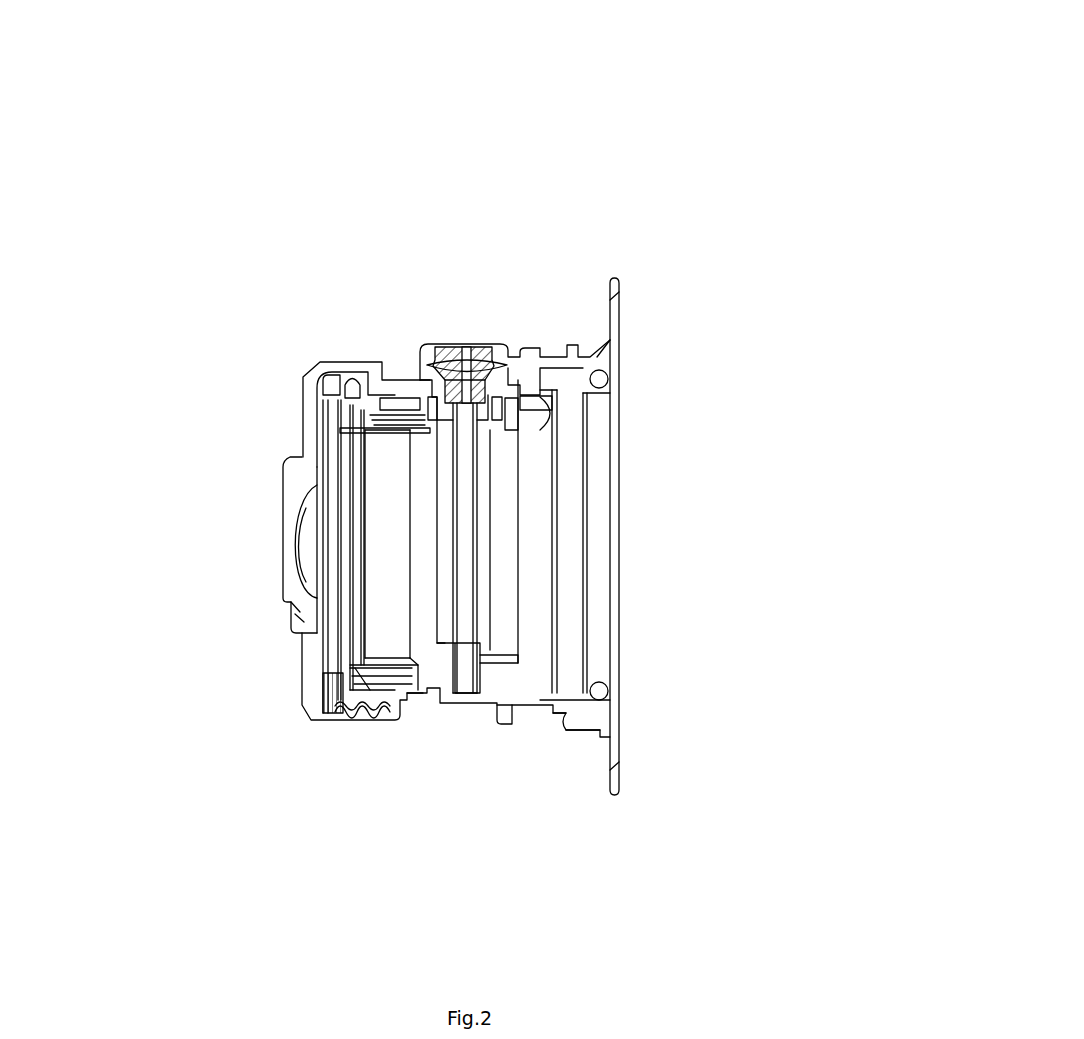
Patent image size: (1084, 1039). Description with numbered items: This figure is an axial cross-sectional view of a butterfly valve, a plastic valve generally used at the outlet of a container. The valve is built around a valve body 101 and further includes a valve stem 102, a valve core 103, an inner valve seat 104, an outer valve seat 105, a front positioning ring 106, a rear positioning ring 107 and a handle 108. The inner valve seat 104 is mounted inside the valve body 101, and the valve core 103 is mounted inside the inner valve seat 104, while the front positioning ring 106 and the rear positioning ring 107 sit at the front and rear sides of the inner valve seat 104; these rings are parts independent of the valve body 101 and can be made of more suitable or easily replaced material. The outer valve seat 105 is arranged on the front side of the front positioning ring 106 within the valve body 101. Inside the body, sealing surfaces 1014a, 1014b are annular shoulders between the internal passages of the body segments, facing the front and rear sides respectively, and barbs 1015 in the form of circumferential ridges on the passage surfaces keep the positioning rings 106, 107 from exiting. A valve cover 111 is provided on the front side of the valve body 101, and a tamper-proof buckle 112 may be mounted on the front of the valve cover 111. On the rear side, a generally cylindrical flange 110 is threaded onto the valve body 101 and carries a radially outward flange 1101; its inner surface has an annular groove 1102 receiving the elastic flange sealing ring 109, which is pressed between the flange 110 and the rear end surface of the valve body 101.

The valve body 101 is at (387, 695).
The valve stem 102 is at (478, 427).
The valve core 103 is at (495, 687).
The inner valve seat 104 is at (418, 690).
The outer valve seat 105 is at (363, 377).
The front positioning ring 106 is at (398, 405).
The rear positioning ring 107 is at (537, 668).
The handle 108 is at (467, 345).
The flange sealing ring 109 is at (608, 698).
The flange 110 is at (613, 347).
The flange 1101 is at (617, 303).
The annular groove 1102 is at (592, 386).
The valve cover 111 is at (330, 636).
The tamper-proof buckle 112 is at (320, 363).
The sealing surface 1014a is at (380, 428).
The sealing surface 1014b is at (510, 404).
The barbs 1015 is at (530, 402).